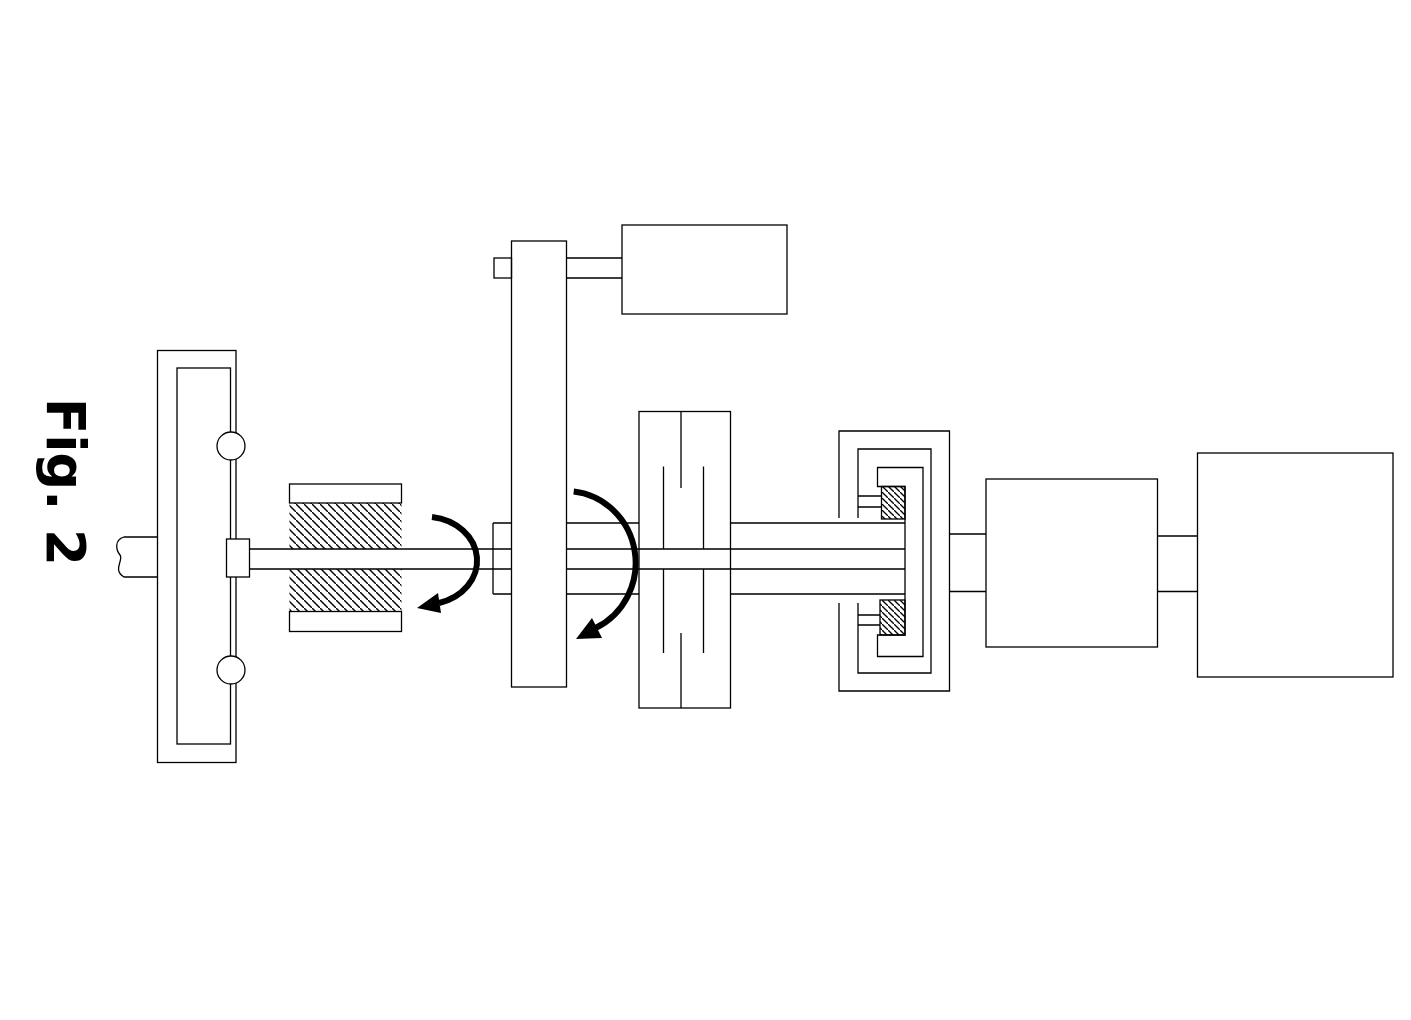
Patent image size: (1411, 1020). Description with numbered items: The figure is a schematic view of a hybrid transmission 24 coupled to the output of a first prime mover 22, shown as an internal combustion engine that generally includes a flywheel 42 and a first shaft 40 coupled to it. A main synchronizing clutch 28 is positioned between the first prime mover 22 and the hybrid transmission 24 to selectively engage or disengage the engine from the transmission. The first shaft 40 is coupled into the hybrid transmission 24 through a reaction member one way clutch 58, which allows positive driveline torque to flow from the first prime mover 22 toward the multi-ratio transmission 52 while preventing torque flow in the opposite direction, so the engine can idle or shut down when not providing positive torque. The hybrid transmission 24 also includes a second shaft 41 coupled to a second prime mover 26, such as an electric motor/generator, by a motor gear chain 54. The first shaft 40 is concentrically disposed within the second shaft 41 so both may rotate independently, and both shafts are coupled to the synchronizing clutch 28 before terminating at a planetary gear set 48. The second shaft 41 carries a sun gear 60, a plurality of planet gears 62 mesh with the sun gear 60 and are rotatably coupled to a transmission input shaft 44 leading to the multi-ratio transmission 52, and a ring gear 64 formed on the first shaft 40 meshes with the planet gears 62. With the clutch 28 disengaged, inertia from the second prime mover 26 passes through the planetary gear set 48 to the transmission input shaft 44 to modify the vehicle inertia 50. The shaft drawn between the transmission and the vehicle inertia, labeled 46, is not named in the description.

The first prime mover 22 is at (220, 285).
The hybrid transmission 24 is at (1049, 140).
The second prime mover 26 is at (705, 225).
The main synchronizing clutch 28 is at (680, 708).
The first shaft 40 is at (271, 548).
The second shaft 41 is at (777, 523).
The flywheel 42 is at (203, 763).
The transmission input shaft 44 is at (970, 592).
The transmission output shaft 46 is at (1178, 536).
The planetary gear set 48 is at (918, 431).
The vehicle inertia 50 is at (1273, 677).
The multi-ratio transmission 52 is at (1084, 647).
The motor gear chain 54 is at (512, 383).
The reaction member one way clutch 58 is at (345, 622).
The sun gear 60 is at (850, 597).
The planet gears 62 is at (899, 485).
The ring gear 64 is at (877, 655).